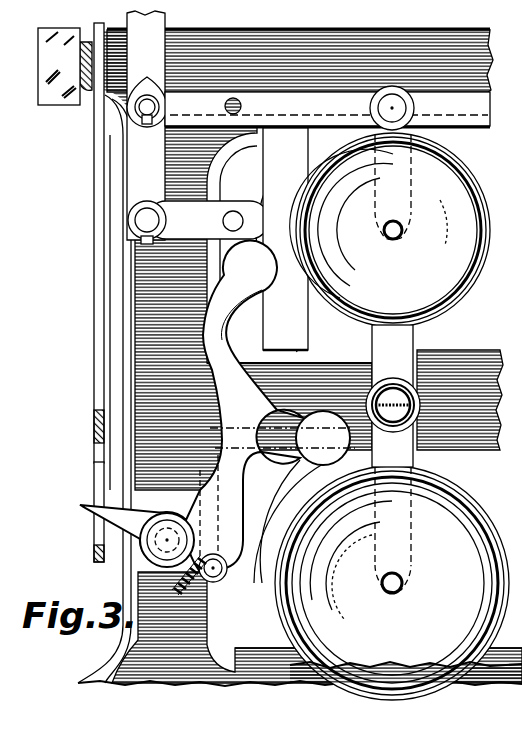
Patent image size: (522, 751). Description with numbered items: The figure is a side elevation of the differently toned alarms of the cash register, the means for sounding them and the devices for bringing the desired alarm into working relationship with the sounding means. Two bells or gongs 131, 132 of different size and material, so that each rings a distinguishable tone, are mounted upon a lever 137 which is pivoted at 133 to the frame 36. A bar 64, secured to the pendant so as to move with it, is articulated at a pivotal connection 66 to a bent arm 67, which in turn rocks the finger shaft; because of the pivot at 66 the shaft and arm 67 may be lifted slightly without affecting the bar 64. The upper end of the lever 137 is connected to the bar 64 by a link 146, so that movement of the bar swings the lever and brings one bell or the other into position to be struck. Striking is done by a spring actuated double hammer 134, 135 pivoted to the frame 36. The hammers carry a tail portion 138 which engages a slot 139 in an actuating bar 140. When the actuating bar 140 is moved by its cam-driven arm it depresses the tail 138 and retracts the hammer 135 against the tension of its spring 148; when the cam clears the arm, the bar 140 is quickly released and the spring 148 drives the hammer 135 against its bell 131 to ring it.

The frame 36 is at (470, 373).
The bar 64 is at (147, 125).
The pivotal connection 66 is at (167, 217).
The arm 67 is at (289, 245).
The bell 131 is at (390, 230).
The bell 132 is at (392, 583).
The pivot 133 is at (418, 433).
The hammer 134 is at (282, 438).
The hammer 135 is at (221, 406).
The lever 137 is at (402, 348).
The tail portion 138 is at (100, 518).
The slot 139 is at (98, 474).
The actuating bar 140 is at (100, 366).
The link 146 is at (327, 108).
The spring 148 is at (218, 582).